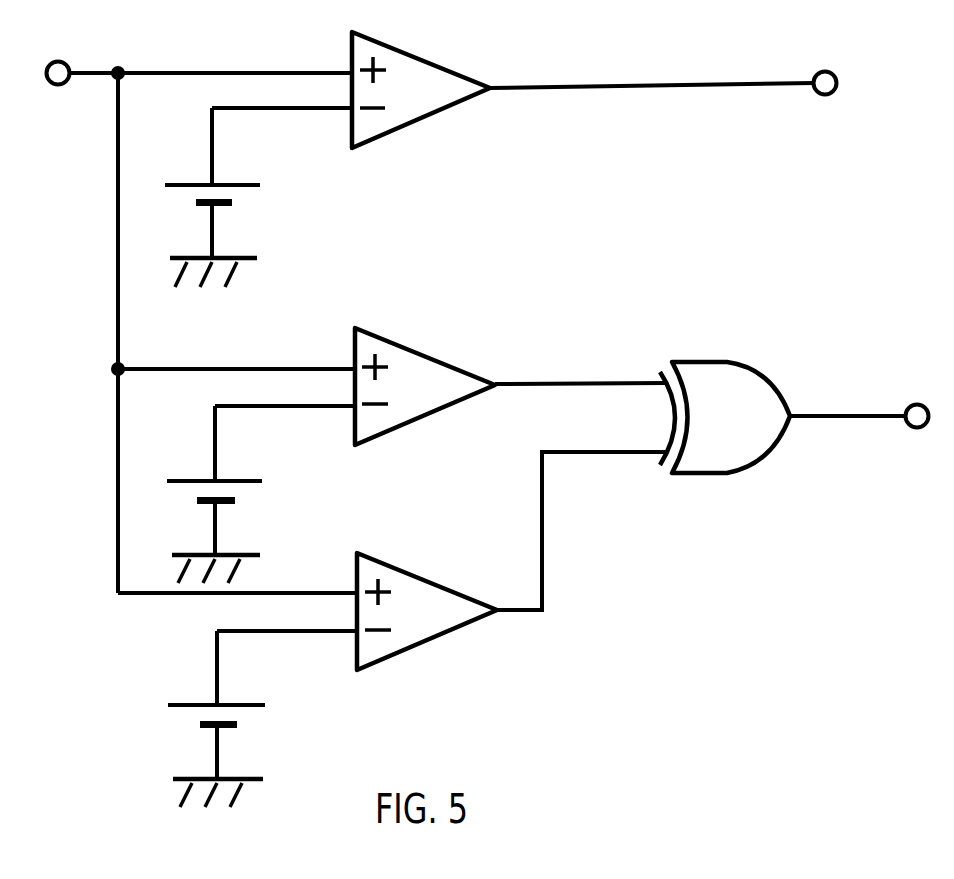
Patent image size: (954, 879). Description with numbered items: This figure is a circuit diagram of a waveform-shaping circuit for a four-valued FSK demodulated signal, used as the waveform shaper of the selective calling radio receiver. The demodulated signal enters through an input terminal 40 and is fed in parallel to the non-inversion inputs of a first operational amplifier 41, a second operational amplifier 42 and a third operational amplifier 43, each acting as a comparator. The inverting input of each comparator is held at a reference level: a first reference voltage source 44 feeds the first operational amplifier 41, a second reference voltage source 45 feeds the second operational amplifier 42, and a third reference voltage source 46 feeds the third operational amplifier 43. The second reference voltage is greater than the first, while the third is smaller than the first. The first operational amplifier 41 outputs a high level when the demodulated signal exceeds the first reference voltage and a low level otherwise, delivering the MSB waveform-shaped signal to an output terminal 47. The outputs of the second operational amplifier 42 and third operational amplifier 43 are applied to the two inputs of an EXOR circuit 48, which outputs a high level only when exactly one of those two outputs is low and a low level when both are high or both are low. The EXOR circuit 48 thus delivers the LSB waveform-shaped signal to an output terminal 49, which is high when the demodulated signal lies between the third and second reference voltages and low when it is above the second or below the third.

The input terminal 40 is at (61, 62).
The first operational amplifier 41 is at (425, 73).
The second operational amplifier 42 is at (431, 366).
The third operational amplifier 43 is at (430, 592).
The first reference voltage source 44 is at (263, 193).
The second reference voltage source 45 is at (266, 489).
The third reference voltage source 46 is at (259, 717).
The output terminal 47 is at (825, 72).
The EXOR circuit 48 is at (730, 369).
The output terminal 49 is at (915, 405).